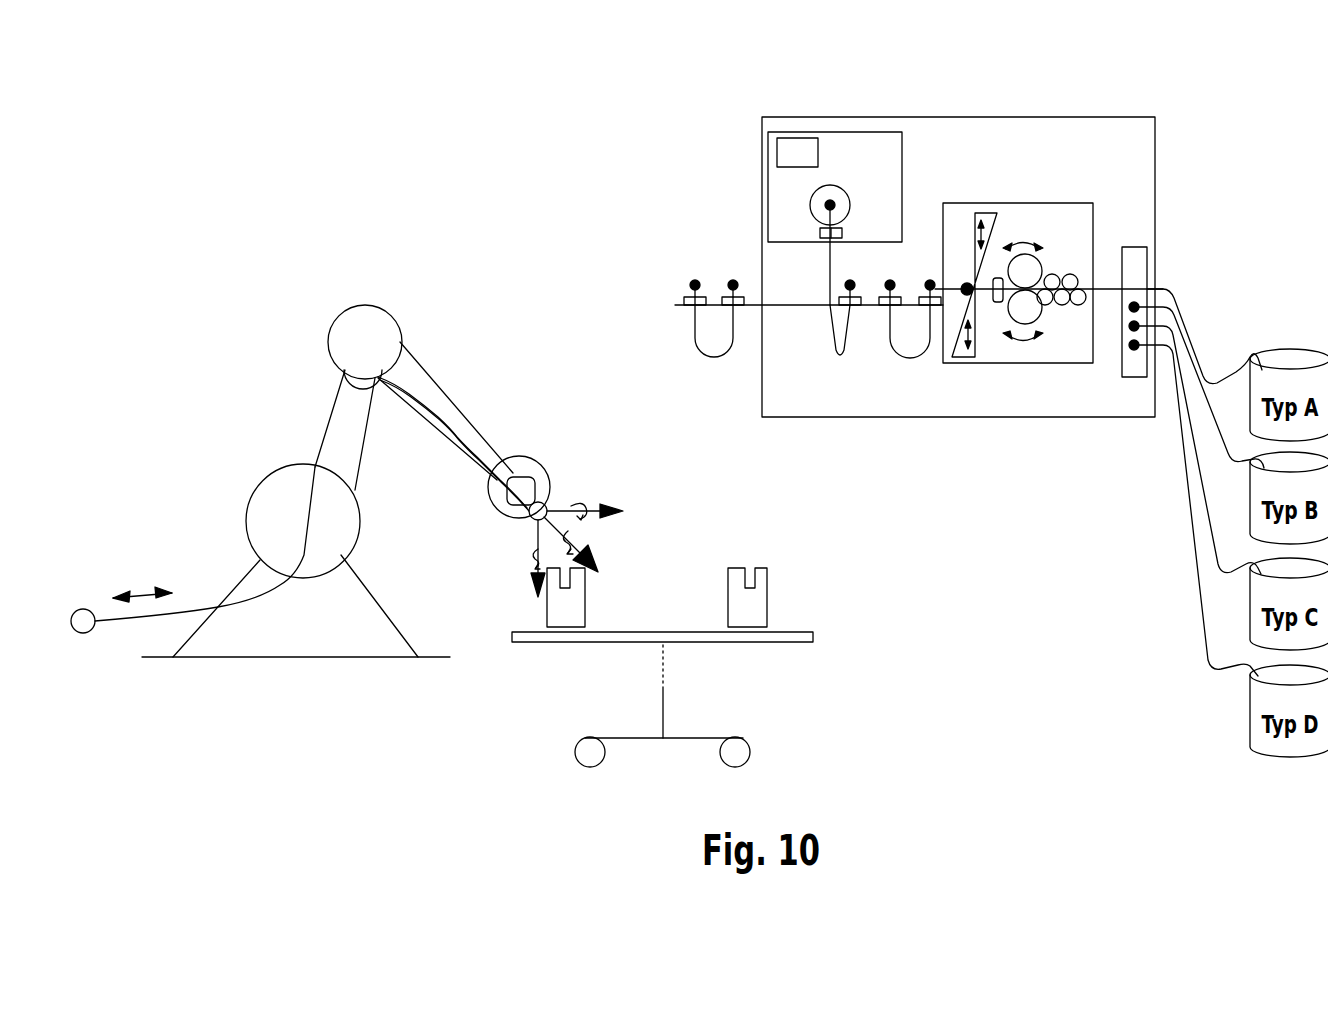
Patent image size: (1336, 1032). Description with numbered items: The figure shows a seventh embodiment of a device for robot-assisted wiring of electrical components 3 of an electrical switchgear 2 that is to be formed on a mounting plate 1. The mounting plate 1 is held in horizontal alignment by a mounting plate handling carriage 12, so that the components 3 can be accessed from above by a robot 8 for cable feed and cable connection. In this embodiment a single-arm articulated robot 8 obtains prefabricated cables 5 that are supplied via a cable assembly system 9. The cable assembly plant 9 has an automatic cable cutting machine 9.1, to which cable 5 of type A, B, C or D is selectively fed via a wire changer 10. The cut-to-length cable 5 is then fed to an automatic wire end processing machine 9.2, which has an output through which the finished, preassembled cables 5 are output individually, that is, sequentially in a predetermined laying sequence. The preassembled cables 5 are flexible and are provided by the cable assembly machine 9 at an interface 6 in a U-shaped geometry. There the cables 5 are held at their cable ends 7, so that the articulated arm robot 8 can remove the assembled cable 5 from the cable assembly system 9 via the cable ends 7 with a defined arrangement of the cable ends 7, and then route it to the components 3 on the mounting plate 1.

The mounting plate 1 is at (789, 634).
The electrical switchgear 2 is at (675, 546).
The electrical components 3 is at (557, 594).
The cable 5 is at (424, 397).
The interface 6 is at (668, 211).
The cable ends 7 is at (75, 626).
The single-arm articulated robot 8 is at (357, 330).
The cable assembly system 9 is at (1147, 184).
The automatic cable cutting machine 9.1 is at (1014, 210).
The automatic wire end processing machine 9.2 is at (829, 137).
The wire changer 10 is at (1127, 254).
The mounting plate handling carriage 12 is at (655, 699).